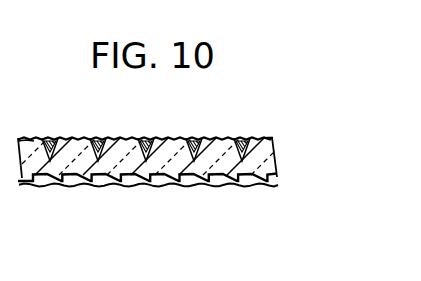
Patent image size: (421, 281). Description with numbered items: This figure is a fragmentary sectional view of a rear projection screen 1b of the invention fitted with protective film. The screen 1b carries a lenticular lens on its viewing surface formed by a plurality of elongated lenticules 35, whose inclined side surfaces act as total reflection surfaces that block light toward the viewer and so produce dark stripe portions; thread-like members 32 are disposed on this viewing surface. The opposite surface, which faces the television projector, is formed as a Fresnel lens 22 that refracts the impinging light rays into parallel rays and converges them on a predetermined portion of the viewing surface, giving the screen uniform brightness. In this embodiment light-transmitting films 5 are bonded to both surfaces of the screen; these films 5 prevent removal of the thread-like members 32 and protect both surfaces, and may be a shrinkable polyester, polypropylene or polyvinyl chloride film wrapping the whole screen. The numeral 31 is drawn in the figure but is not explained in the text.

The light-transmitting film 5 is at (241, 137).
The Fresnel lens 22 is at (220, 174).
The top notches 31 is at (45, 137).
The thread-like member 32 is at (97, 138).
The lenticule 35 is at (21, 137).
The rear projection screen 1b is at (273, 136).